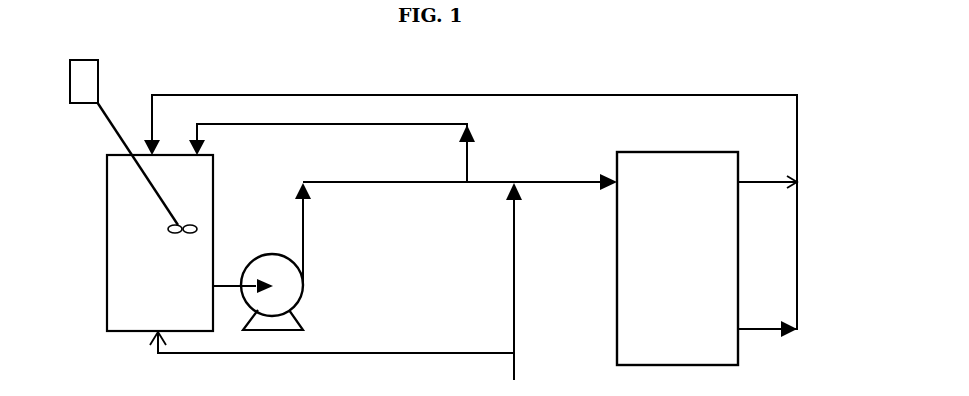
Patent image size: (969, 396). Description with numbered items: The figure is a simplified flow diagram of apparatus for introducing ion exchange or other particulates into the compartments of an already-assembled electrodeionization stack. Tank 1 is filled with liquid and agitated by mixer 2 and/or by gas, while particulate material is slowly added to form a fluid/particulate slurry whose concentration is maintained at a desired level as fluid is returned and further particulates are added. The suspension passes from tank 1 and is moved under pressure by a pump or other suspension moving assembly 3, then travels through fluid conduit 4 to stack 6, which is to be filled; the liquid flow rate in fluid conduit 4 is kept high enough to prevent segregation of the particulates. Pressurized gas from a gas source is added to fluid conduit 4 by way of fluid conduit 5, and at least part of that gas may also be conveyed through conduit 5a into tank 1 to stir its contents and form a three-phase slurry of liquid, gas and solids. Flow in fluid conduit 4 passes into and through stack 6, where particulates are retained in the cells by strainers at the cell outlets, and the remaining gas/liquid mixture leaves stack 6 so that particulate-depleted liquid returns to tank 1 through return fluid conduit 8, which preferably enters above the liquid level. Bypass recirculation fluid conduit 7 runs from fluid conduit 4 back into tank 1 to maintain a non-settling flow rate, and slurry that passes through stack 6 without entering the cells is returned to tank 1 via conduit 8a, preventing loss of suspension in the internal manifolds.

The tank 1 is at (125, 257).
The mixer 2 is at (105, 118).
The suspension moving assembly 3 is at (284, 295).
The fluid conduit 4 is at (412, 183).
The fluid conduit 5 is at (512, 238).
The conduit 5a is at (270, 353).
The stack 6 is at (625, 337).
The bypass recirculation fluid conduit 7 is at (473, 145).
The return fluid conduit 8 is at (797, 185).
The conduit 8a is at (762, 178).